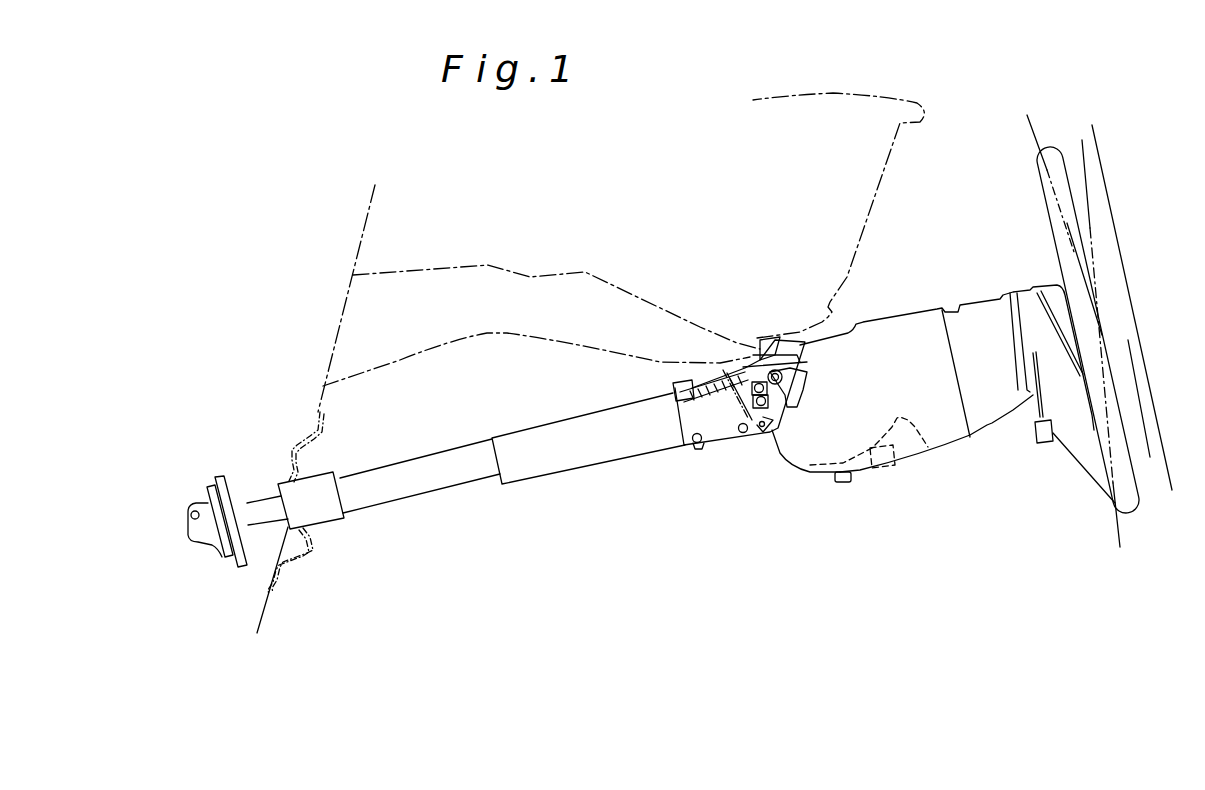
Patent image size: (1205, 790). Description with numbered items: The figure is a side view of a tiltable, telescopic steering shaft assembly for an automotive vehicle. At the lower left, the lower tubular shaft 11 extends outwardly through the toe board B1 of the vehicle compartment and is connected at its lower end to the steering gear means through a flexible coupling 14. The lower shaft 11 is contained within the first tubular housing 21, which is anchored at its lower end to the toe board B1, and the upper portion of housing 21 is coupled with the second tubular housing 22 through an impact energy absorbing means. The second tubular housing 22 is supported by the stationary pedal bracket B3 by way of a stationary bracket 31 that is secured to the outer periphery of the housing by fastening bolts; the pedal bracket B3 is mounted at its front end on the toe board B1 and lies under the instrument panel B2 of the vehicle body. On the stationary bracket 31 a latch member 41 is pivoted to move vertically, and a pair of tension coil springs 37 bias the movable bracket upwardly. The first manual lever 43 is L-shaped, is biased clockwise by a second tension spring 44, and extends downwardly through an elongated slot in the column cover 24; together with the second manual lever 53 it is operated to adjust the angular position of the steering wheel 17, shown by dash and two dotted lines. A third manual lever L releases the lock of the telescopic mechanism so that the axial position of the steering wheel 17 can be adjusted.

The lower tubular shaft 11 is at (263, 505).
The flexible coupling 14 is at (192, 537).
The steering wheel 17 is at (1053, 235).
The first tubular housing 21 is at (426, 497).
The second tubular housing 22 is at (588, 458).
The column cover 24 is at (960, 437).
The stationary bracket 31 is at (712, 442).
The tension coil springs 37 is at (705, 380).
The latch member 41 is at (788, 368).
The manual lever 43 is at (775, 440).
The second tension spring 44 is at (752, 420).
The second manual lever 53 is at (860, 473).
The third manual lever L is at (1043, 443).
The toe board B1 is at (263, 607).
The instrument panel B2 is at (827, 202).
The stationary pedal bracket B3 is at (482, 317).